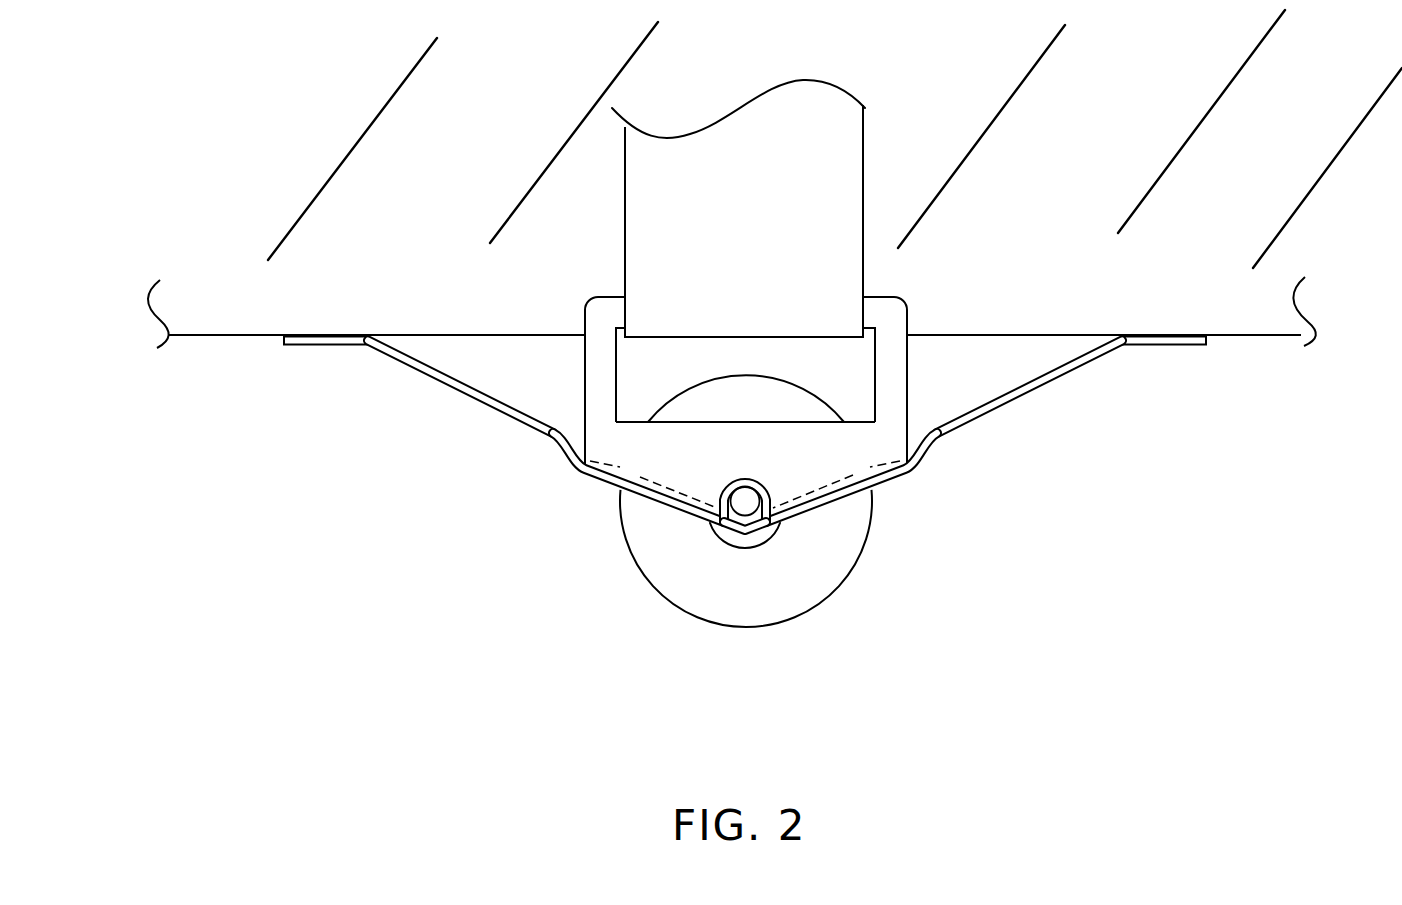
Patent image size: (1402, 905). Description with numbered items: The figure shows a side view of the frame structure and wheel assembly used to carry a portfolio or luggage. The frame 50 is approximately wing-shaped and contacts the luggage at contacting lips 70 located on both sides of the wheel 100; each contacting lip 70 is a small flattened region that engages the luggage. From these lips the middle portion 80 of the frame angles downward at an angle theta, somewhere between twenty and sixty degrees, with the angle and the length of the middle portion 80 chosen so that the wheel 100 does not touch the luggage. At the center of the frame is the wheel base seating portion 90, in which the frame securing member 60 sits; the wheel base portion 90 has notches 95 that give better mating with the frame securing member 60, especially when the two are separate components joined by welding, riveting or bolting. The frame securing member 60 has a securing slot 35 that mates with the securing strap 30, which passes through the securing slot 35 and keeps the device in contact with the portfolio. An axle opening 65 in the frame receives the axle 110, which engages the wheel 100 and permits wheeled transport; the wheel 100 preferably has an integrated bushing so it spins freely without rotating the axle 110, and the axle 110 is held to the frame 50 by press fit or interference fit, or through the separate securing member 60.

The securing strap 30 is at (853, 148).
The securing slot 35 is at (862, 360).
The frame 50 is at (400, 532).
The frame securing member 60 is at (592, 312).
The axle opening 65 is at (727, 512).
The contacting lips 70 is at (283, 345).
The middle portion of the frame 80 is at (1068, 417).
The wheel base seating portion of the frame 90 is at (600, 490).
The notches 95 is at (923, 460).
The wheel 100 is at (688, 593).
The axle 110 is at (747, 505).